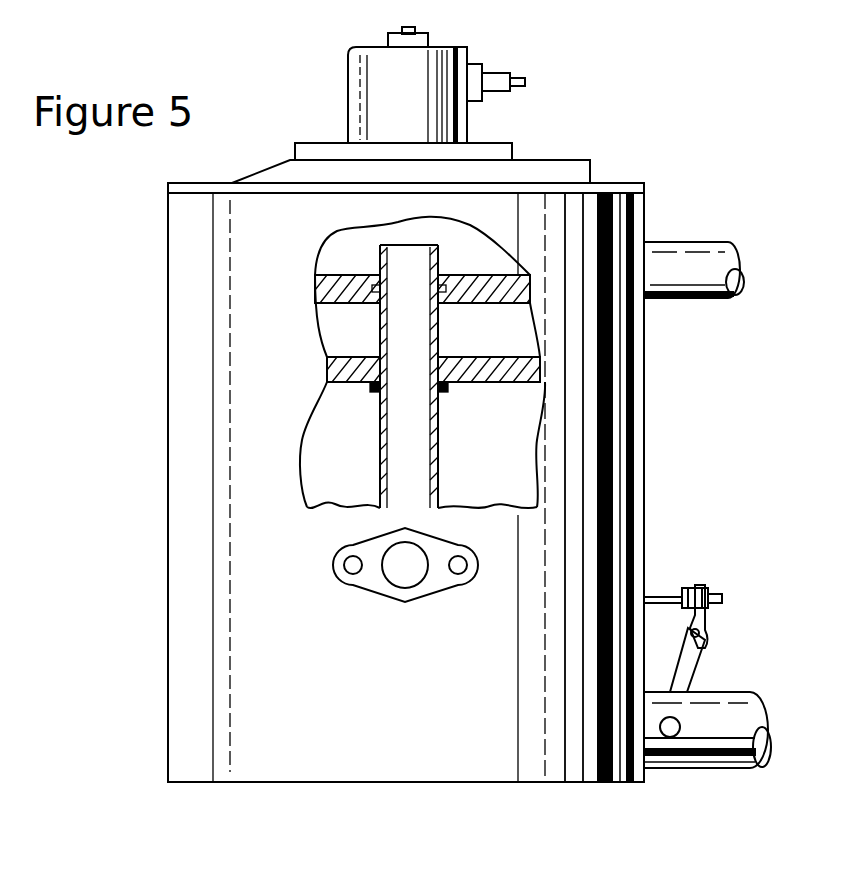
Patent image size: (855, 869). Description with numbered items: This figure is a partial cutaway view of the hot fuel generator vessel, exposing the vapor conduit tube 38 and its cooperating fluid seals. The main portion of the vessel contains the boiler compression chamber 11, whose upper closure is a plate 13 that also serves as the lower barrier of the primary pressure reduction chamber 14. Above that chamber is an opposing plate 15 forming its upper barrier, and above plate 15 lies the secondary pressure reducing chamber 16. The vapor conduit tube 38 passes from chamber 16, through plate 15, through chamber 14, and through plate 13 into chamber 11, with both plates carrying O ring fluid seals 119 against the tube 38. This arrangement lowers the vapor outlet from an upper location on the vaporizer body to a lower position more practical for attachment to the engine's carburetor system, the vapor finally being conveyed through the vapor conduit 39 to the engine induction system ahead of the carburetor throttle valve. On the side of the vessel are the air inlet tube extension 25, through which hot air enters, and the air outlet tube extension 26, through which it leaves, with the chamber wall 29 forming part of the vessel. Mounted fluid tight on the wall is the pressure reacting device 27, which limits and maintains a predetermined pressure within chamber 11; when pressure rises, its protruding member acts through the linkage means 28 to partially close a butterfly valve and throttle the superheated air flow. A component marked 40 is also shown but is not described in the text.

The boiler compression chamber 11 is at (495, 473).
The plate 13 is at (513, 378).
The primary pressure reduction chamber 14 is at (505, 340).
The plate 15 is at (473, 300).
The secondary pressure reducing chamber 16 is at (352, 247).
The O ring fluid seals 119 is at (337, 370).
The air inlet tube extension 25 is at (703, 747).
The air outlet tube extension 26 is at (692, 255).
The pressure reacting device 27 is at (667, 592).
The linkage means 28 is at (683, 683).
The chamber wall 29 is at (538, 868).
The vapor conduit tube 38 is at (395, 470).
The vapor conduit 39 is at (390, 577).
The solenoid 40 is at (468, 58).